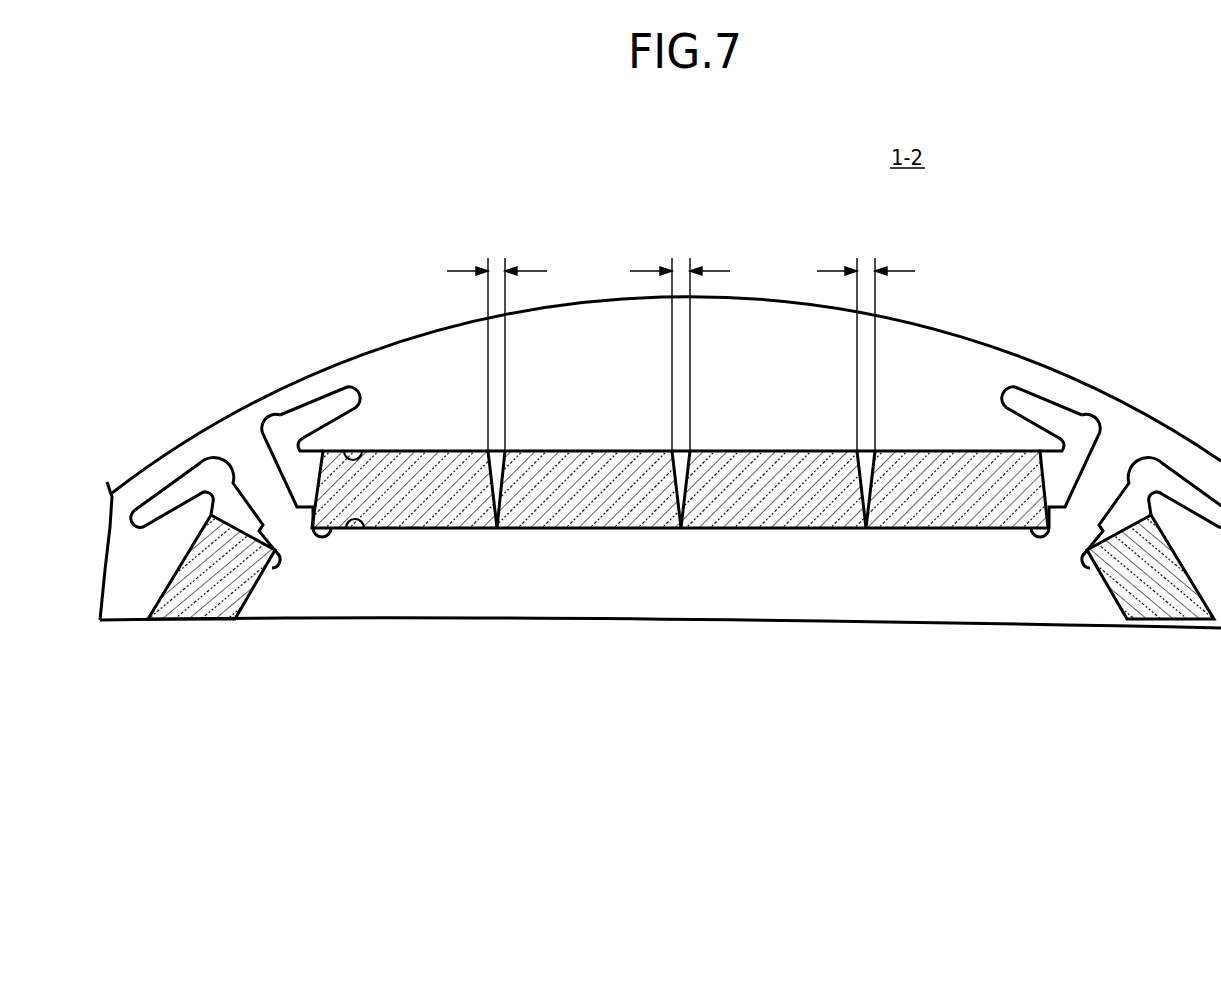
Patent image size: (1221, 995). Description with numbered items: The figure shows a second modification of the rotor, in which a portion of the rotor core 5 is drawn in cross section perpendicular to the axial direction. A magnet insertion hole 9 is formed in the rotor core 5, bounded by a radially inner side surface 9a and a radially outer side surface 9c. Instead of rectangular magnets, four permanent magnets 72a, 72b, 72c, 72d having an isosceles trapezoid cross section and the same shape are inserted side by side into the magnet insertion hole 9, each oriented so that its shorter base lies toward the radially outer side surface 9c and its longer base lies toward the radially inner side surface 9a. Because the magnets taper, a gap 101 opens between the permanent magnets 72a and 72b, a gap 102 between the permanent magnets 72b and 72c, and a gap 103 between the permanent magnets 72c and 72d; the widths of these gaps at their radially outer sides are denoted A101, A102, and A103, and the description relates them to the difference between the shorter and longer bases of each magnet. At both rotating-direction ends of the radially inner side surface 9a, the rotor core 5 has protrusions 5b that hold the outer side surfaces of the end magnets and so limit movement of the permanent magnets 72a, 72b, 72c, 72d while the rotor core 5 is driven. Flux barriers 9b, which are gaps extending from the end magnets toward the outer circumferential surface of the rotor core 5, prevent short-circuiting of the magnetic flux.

The rotor core 5 is at (1004, 349).
The protrusion 5b is at (305, 508).
The magnet insertion hole 9 is at (723, 451).
The radially inner side surface 9a is at (363, 532).
The flux barrier 9b is at (282, 450).
The radially outer side surface 9c is at (340, 450).
The permanent magnet 72a is at (401, 517).
The permanent magnet 72b is at (580, 515).
The permanent magnet 72c is at (770, 515).
The permanent magnet 72d is at (958, 513).
The gap 101 is at (495, 452).
The gap 102 is at (679, 452).
The gap 103 is at (864, 452).
The gap on the radially outer side A101 is at (495, 258).
The gap on the radially outer side A102 is at (679, 258).
The gap on the radially outer side A103 is at (864, 258).